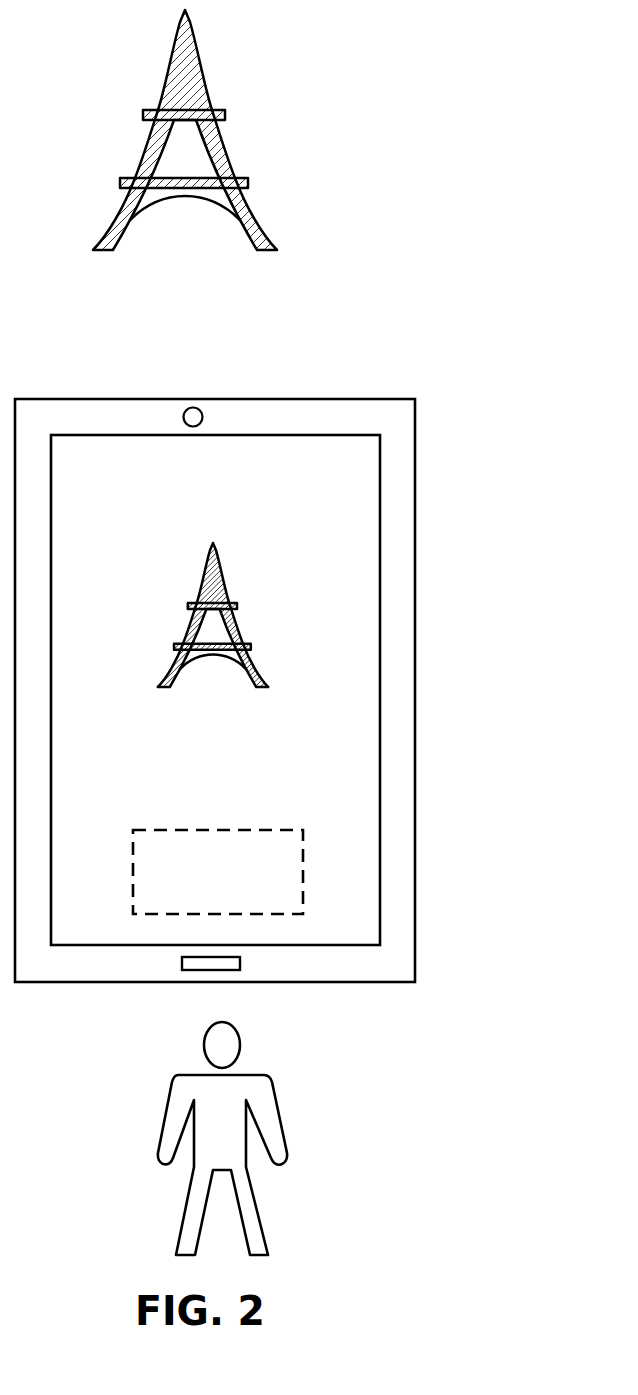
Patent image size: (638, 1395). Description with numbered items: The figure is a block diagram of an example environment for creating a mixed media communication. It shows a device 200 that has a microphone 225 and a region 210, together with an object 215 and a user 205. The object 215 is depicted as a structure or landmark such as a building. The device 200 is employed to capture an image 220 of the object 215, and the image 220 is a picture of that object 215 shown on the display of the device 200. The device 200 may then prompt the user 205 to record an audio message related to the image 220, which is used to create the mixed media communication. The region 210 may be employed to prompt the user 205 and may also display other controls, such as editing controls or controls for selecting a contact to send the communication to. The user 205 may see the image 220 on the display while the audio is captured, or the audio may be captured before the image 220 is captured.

The device 200 is at (363, 384).
The user 205 is at (325, 1194).
The region 210 is at (303, 863).
The object 215 is at (255, 122).
The image 220 is at (243, 617).
The microphone 225 is at (240, 966).